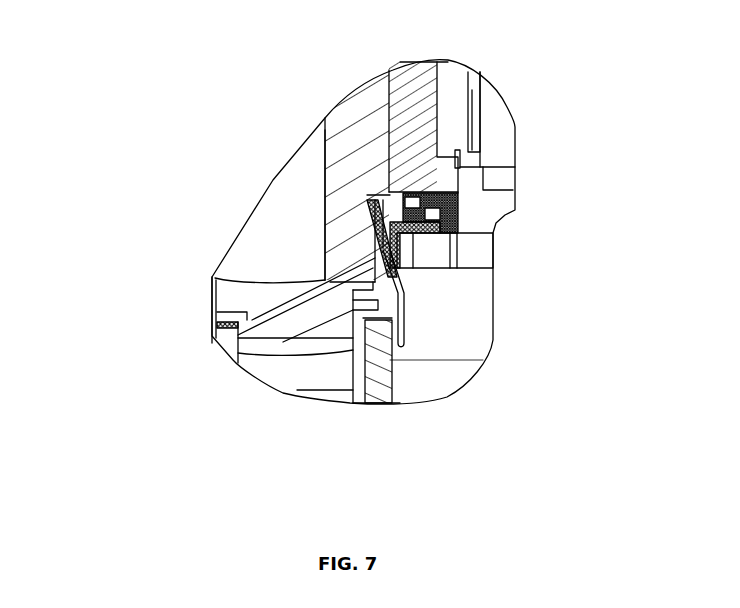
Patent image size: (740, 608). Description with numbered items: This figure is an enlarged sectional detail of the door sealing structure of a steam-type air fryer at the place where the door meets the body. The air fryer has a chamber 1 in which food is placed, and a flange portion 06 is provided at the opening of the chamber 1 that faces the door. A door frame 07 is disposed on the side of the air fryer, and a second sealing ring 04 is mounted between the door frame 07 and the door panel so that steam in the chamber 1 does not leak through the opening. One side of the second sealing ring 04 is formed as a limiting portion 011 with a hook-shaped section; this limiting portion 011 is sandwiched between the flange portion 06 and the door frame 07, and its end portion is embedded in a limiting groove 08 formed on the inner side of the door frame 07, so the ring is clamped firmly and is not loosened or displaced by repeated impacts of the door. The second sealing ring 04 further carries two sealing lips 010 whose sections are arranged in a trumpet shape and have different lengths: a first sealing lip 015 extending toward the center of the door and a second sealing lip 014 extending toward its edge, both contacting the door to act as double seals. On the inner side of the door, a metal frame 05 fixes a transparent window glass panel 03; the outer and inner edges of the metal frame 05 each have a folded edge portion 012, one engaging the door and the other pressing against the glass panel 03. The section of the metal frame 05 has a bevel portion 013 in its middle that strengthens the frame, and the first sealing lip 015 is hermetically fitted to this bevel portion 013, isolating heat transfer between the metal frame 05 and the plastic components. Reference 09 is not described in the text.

The chamber 1 is at (497, 255).
The transparent window glass panel 03 is at (240, 357).
The second sealing ring 04 is at (393, 225).
The metal frame 05 is at (405, 327).
The flange portion 06 is at (497, 235).
The door frame 07 is at (472, 68).
The limiting groove 08 is at (410, 130).
The panel 09 is at (352, 132).
The sealing lips 010 is at (324, 160).
The limiting portion 011 is at (463, 180).
The folded edge portion 012 is at (390, 330).
The bevel portion 013 is at (215, 278).
The second sealing lip 014 is at (387, 247).
The first sealing lip 015 is at (375, 262).